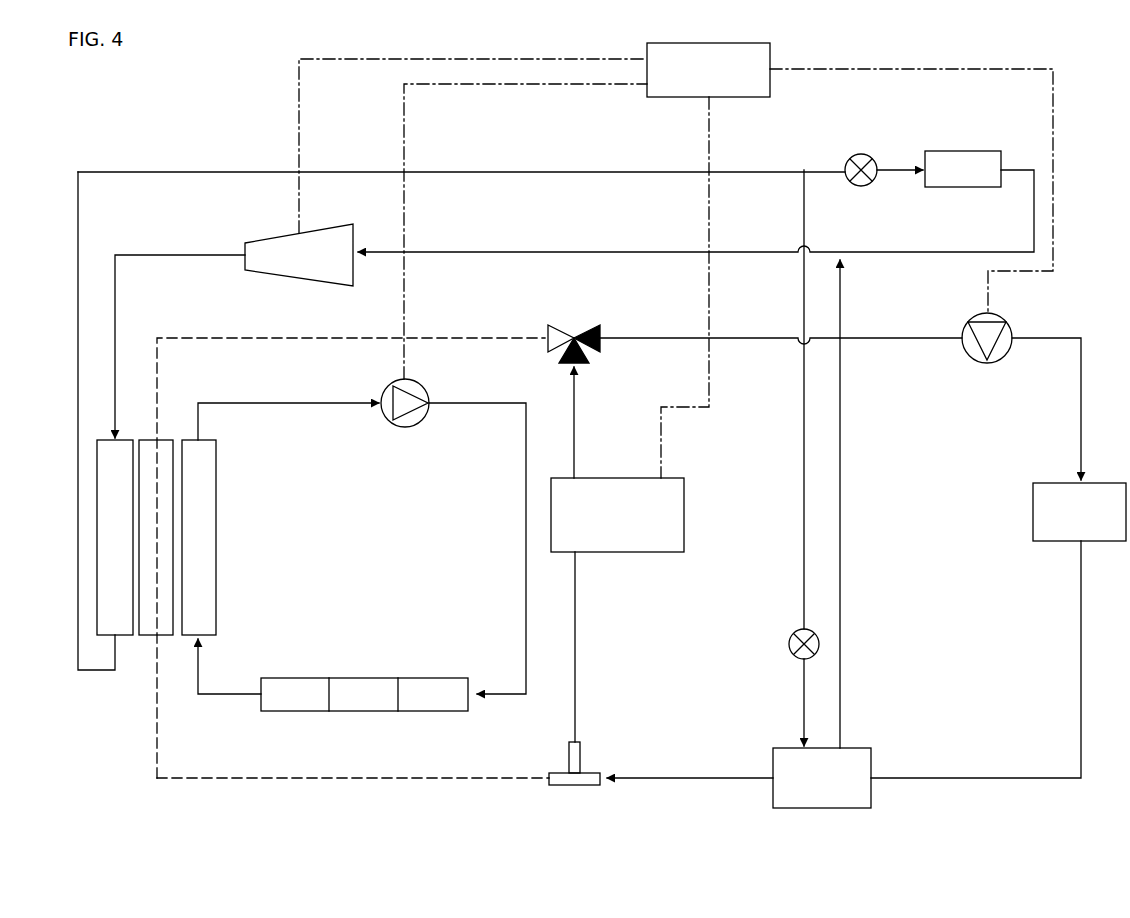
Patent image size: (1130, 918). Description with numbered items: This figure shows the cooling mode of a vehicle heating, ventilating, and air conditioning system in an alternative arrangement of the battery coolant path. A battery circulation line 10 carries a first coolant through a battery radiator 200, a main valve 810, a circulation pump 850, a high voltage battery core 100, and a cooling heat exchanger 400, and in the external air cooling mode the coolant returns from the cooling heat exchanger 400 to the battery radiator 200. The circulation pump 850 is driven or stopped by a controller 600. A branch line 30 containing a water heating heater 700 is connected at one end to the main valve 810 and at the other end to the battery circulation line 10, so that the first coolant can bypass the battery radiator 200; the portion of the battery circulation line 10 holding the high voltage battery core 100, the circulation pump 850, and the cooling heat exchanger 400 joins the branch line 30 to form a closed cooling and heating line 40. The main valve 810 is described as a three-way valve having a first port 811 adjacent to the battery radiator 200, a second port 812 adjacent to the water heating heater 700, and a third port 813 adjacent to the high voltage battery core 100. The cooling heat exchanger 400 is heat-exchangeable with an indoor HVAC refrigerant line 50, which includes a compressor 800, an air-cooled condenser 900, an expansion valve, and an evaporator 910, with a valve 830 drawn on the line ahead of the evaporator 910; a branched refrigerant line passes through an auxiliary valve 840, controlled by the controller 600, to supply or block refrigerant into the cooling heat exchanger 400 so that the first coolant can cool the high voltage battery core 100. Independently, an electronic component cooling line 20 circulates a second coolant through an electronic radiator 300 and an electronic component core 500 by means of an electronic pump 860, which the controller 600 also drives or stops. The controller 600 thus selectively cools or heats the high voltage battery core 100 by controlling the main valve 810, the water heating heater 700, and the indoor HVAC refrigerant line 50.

The battery circulation line 10 is at (453, 337).
The electronic component cooling line 20 is at (526, 528).
The branch line 30 is at (576, 425).
The cooling and heating line 40 is at (1080, 650).
The indoor HVAC refrigerant line 50 is at (545, 170).
The high voltage battery core 100 is at (1033, 521).
The battery radiator 200 is at (167, 438).
The electronic radiator 300 is at (216, 545).
The cooling heat exchanger 400 is at (872, 750).
The electronic component core 500 is at (360, 678).
The controller 600 is at (770, 50).
The water heating heater 700 is at (638, 555).
The compressor 800 is at (258, 272).
The main valve 810 is at (553, 328).
The first port 811 is at (548, 326).
The second port 812 is at (582, 365).
The third port 813 is at (601, 325).
The valve 830 is at (862, 153).
The auxiliary valve 840 is at (789, 644).
The circulation pump 850 is at (975, 362).
The electronic pump 860 is at (403, 428).
The air-cooled condenser 900 is at (124, 637).
The evaporator 910 is at (975, 150).